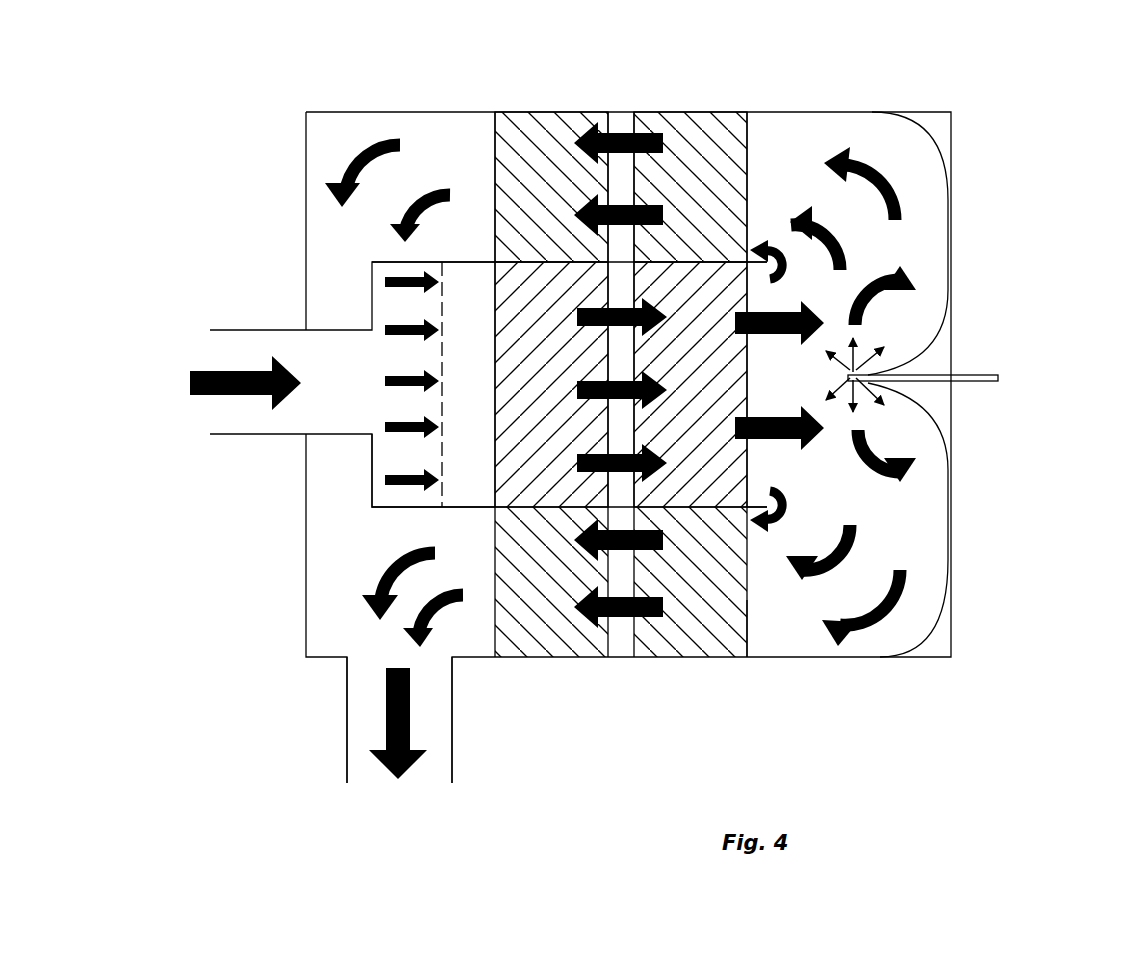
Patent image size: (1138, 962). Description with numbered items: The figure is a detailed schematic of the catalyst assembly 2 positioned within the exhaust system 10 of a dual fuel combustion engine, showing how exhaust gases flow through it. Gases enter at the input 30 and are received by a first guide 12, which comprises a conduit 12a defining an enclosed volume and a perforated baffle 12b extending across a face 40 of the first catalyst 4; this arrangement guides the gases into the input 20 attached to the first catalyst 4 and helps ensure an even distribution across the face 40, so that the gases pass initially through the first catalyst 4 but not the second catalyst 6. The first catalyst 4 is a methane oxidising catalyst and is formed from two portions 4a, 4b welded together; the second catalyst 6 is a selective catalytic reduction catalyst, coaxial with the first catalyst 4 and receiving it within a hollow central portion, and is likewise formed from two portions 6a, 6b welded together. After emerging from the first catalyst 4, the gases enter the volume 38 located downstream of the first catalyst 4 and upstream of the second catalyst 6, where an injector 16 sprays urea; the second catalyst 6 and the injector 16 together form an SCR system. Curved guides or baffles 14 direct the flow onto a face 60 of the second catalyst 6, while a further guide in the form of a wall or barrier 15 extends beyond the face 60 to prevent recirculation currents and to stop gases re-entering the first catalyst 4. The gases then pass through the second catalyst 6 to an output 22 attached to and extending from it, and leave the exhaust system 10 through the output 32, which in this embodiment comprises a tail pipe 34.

The exhaust system 10 is at (411, 110).
The first guide 12 is at (320, 330).
The conduit 12a is at (350, 422).
The perforated baffle 12b is at (440, 313).
The input 30 is at (185, 379).
The input 20 is at (356, 404).
The face 40 is at (495, 423).
The catalyst assembly 2 is at (565, 660).
The first catalyst 4 is at (508, 484).
The first catalyst portion 4a is at (522, 394).
The first catalyst portion 4b is at (676, 394).
The second catalyst 6 is at (690, 155).
The second catalyst portion 6a is at (526, 194).
The second catalyst portion 6b is at (676, 194).
The output 22 is at (429, 162).
The volume 38 is at (781, 177).
The curved guide 14 is at (934, 418).
The injector 16 is at (1000, 378).
The second guide 15 is at (755, 510).
The face 60 is at (745, 620).
The tail pipe 34 is at (360, 708).
The output 32 is at (402, 786).